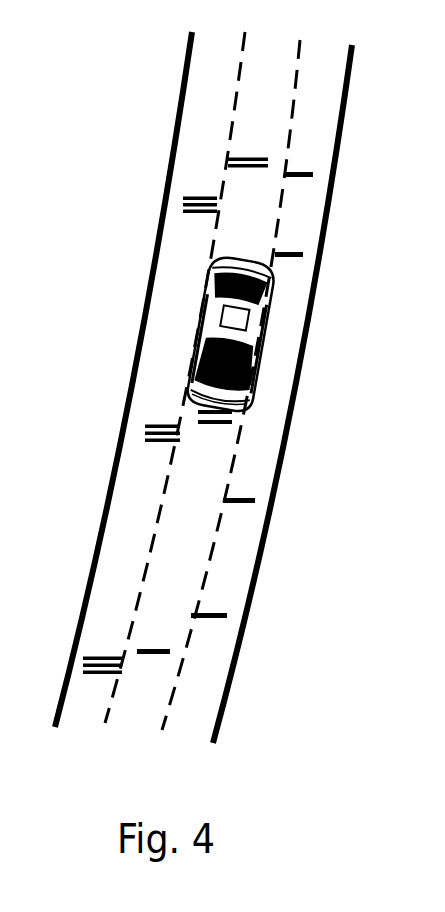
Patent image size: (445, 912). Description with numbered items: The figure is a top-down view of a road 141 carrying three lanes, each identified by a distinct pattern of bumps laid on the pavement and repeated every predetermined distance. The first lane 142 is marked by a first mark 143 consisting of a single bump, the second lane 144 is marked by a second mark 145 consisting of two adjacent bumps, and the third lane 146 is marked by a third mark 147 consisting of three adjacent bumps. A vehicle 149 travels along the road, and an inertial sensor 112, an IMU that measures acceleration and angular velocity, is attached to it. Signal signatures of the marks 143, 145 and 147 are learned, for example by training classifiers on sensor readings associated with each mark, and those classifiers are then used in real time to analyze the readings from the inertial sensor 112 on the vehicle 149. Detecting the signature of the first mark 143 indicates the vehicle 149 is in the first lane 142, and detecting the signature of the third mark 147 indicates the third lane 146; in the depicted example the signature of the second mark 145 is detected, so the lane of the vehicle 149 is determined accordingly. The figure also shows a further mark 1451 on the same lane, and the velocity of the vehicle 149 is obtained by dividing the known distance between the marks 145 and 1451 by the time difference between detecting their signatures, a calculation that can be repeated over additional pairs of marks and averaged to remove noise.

The road 141 is at (242, 387).
The first lane 142 is at (318, 122).
The first mark 143 is at (303, 167).
The second lane 144 is at (255, 230).
The second mark 145 is at (215, 423).
The mark 1451 is at (165, 652).
The third lane 146 is at (207, 123).
The third mark 147 is at (187, 197).
The vehicle 149 is at (245, 370).
The inertial sensor 112 is at (242, 318).